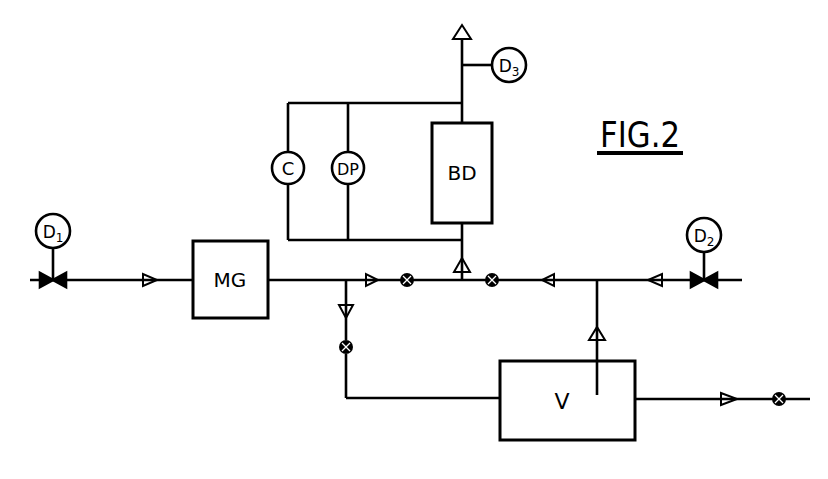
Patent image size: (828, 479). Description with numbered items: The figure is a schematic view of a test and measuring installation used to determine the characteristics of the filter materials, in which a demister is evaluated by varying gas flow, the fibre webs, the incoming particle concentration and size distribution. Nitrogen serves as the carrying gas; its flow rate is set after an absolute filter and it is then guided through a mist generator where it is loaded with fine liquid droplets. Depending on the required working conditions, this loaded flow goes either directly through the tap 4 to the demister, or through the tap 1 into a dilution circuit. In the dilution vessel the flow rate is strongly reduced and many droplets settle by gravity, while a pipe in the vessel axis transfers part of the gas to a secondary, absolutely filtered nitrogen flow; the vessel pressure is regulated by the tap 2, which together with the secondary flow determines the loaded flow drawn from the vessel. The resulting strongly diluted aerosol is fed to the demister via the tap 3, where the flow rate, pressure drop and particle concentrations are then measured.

The tap 1 is at (337, 347).
The tap 2 is at (779, 413).
The tap 3 is at (492, 270).
The tap 4 is at (407, 270).